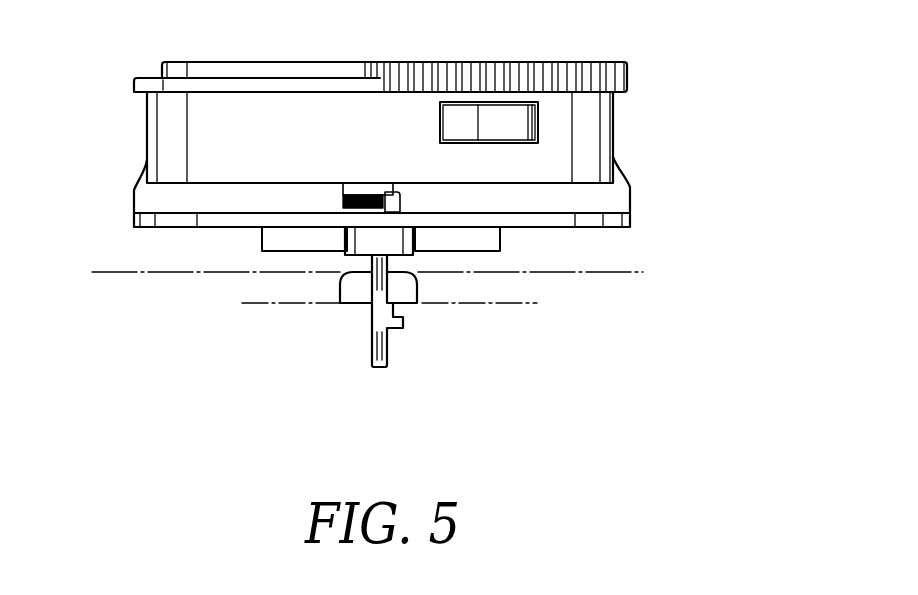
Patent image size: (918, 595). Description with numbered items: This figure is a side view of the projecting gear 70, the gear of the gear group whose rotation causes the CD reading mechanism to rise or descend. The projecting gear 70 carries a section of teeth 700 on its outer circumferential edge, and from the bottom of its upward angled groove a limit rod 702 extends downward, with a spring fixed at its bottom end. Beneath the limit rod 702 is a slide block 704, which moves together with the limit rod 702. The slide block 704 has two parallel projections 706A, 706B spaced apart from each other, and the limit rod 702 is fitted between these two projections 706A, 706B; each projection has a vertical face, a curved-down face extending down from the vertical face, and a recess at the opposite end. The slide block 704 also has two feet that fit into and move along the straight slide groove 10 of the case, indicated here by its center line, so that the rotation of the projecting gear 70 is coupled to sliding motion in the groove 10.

The projecting gear 70 is at (170, 143).
The section of teeth 700 is at (613, 71).
The limit rod 702 is at (366, 269).
The slide block 704 is at (357, 313).
The projection 706A is at (352, 274).
The projection 706B is at (418, 280).
The straight slide groove 10 is at (513, 290).